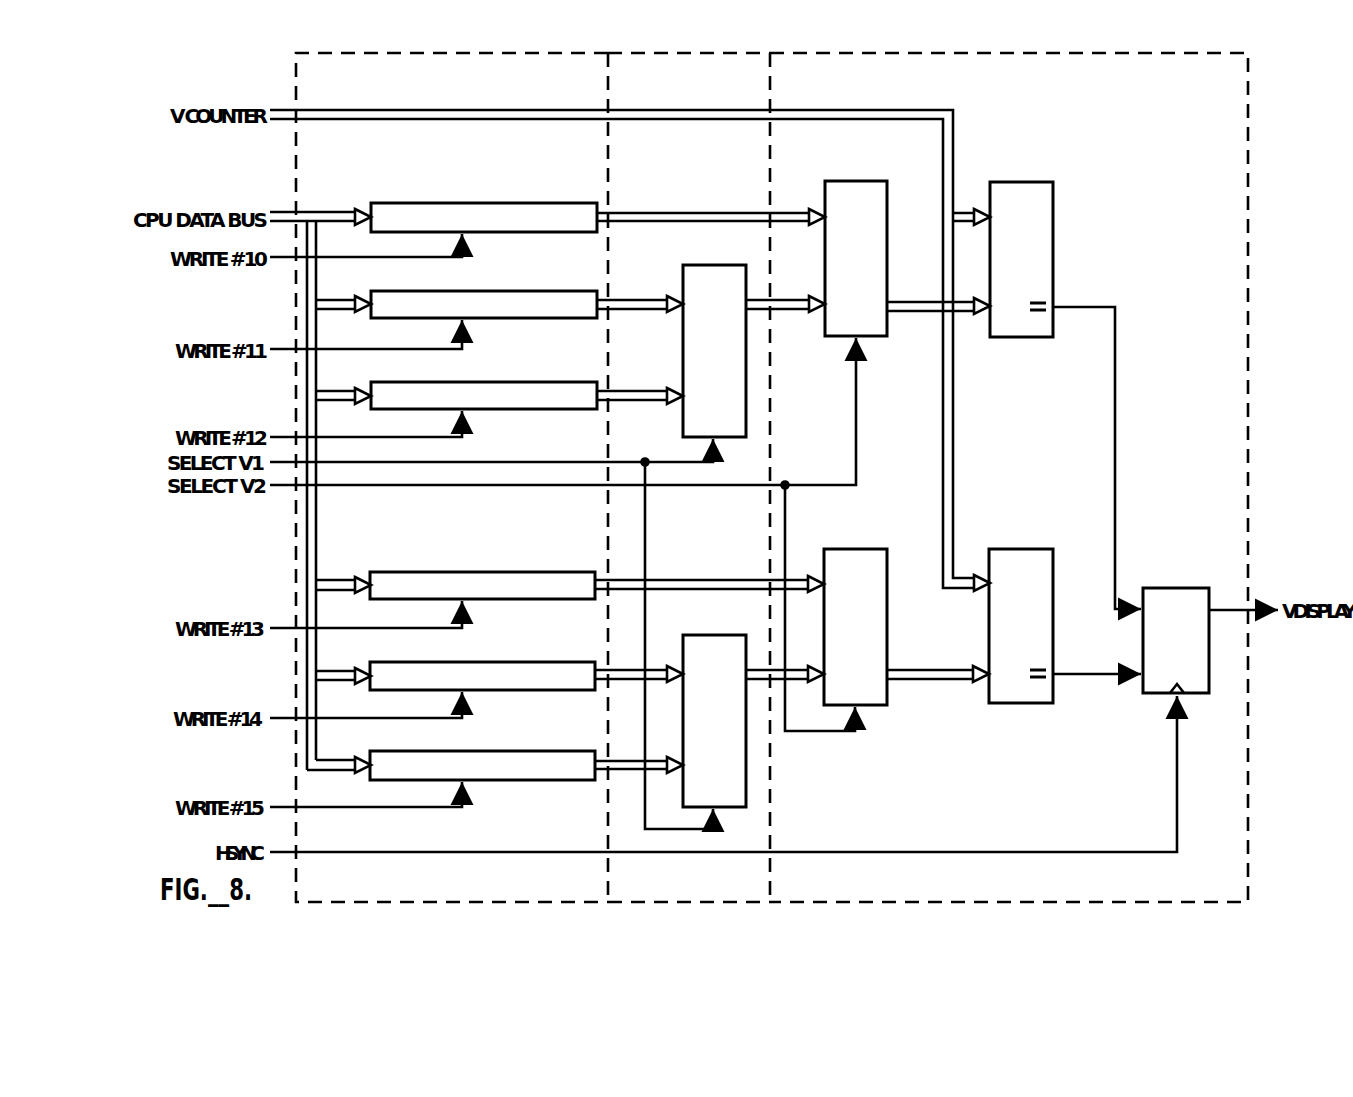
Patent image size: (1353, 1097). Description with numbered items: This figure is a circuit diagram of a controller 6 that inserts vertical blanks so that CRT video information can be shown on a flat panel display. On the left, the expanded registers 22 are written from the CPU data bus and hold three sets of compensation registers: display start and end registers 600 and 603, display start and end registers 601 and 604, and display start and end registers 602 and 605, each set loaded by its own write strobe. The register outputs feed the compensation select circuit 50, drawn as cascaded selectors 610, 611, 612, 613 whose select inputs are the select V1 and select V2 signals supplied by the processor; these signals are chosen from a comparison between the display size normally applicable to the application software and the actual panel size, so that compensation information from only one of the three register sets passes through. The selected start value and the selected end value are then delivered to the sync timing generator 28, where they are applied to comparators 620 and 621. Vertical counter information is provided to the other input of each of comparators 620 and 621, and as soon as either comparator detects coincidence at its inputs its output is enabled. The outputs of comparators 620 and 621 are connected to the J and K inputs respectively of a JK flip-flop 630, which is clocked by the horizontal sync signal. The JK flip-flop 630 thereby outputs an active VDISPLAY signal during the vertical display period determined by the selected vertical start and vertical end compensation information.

The controller 6 is at (1280, 82).
The expanded registers 22 is at (597, 87).
The compensation select circuit 50 is at (761, 87).
The sync timing generator 28 is at (1231, 89).
The display start register 600 is at (527, 203).
The display start register 601 is at (534, 291).
The display start register 602 is at (534, 382).
The display end register 603 is at (534, 572).
The display end register 604 is at (534, 662).
The display end register 605 is at (534, 751).
The multiplexer 610 is at (867, 181).
The multiplexer 611 is at (718, 265).
The multiplexer 612 is at (859, 549).
The multiplexer 613 is at (718, 635).
The comparator 620 is at (1034, 182).
The comparator 621 is at (1029, 549).
The JK flip-flop 630 is at (1185, 588).